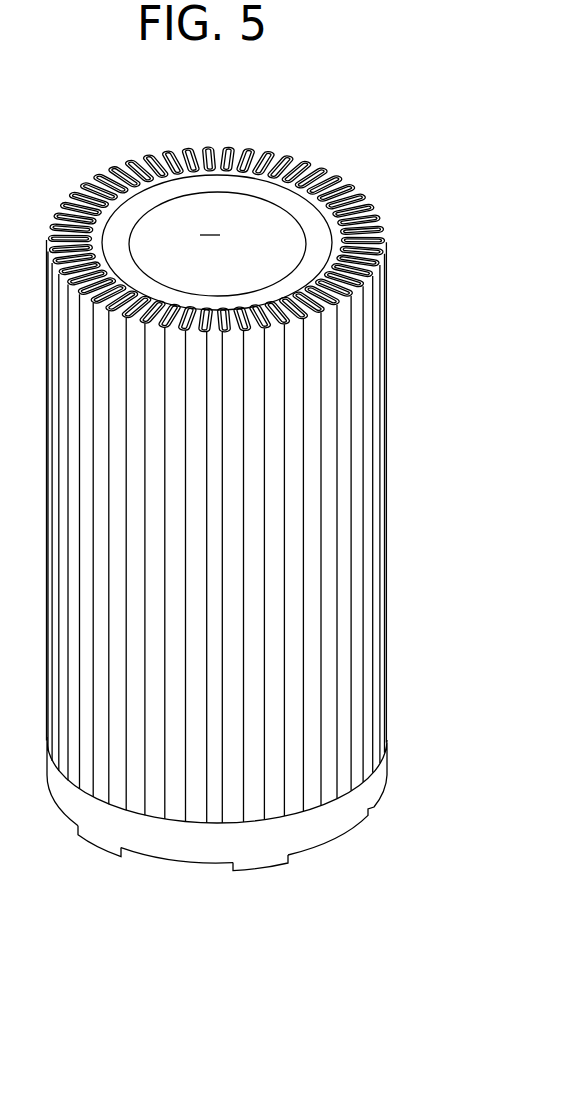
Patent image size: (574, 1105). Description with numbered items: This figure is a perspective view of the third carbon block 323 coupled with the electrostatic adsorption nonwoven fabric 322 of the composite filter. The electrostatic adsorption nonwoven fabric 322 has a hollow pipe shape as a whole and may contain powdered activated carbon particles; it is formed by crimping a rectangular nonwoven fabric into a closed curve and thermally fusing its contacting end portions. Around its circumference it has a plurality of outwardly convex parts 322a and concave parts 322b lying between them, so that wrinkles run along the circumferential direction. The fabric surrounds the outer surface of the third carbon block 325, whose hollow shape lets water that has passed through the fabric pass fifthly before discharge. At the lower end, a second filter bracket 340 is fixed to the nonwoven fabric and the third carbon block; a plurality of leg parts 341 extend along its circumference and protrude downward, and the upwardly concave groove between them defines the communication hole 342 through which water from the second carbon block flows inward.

The electrostatic adsorption nonwoven fabric 322 is at (363, 193).
The convex parts 322a is at (372, 287).
The concave parts 322b is at (328, 290).
The third carbon block 323 is at (242, 185).
The third carbon block 325 is at (211, 235).
The second filter bracket 340 is at (306, 832).
The leg parts 341 is at (264, 865).
The communication hole 342 is at (177, 865).